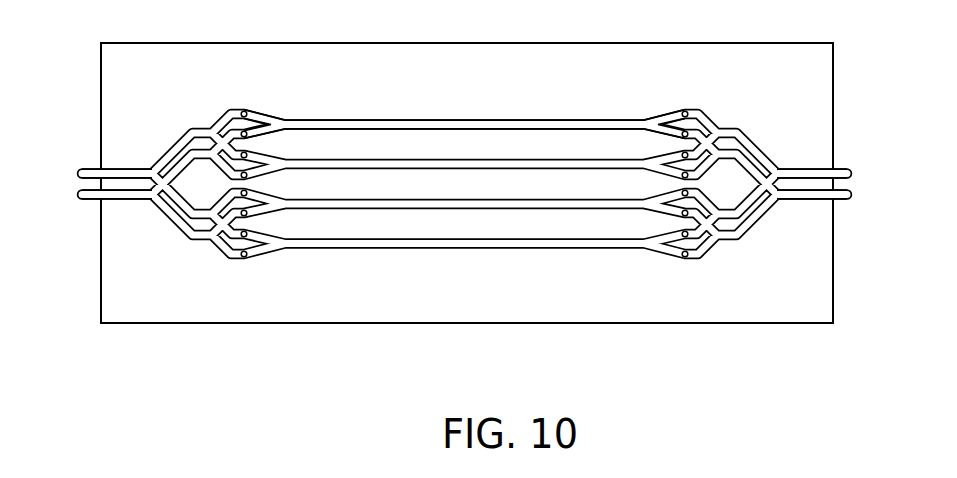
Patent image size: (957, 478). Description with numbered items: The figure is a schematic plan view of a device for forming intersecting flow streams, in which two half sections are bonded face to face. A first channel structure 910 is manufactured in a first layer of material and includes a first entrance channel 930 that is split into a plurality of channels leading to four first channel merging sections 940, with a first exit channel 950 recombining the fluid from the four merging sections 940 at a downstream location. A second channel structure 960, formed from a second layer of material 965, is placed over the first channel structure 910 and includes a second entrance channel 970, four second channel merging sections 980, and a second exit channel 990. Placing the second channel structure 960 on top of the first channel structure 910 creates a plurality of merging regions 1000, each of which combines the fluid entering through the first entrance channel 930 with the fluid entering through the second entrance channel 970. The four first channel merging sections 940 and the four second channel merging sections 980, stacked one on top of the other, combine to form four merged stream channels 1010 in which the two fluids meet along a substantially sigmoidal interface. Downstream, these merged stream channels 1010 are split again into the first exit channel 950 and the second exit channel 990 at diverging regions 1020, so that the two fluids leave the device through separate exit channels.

The first entrance channel 930 is at (90, 169).
The second entrance channel 970 is at (90, 198).
The first exit channel 950 is at (839, 169).
The second exit channel 990 is at (839, 198).
The first channel merging section 940 is at (245, 110).
The first channel structure 910 is at (684, 112).
The second channel merging section 980 is at (248, 258).
The second channel structure 960 is at (681, 258).
The merging region 1000 is at (291, 118).
The diverging region 1020 is at (638, 118).
The merged stream channel 1010 is at (482, 160).
The second layer of material 965 is at (137, 295).